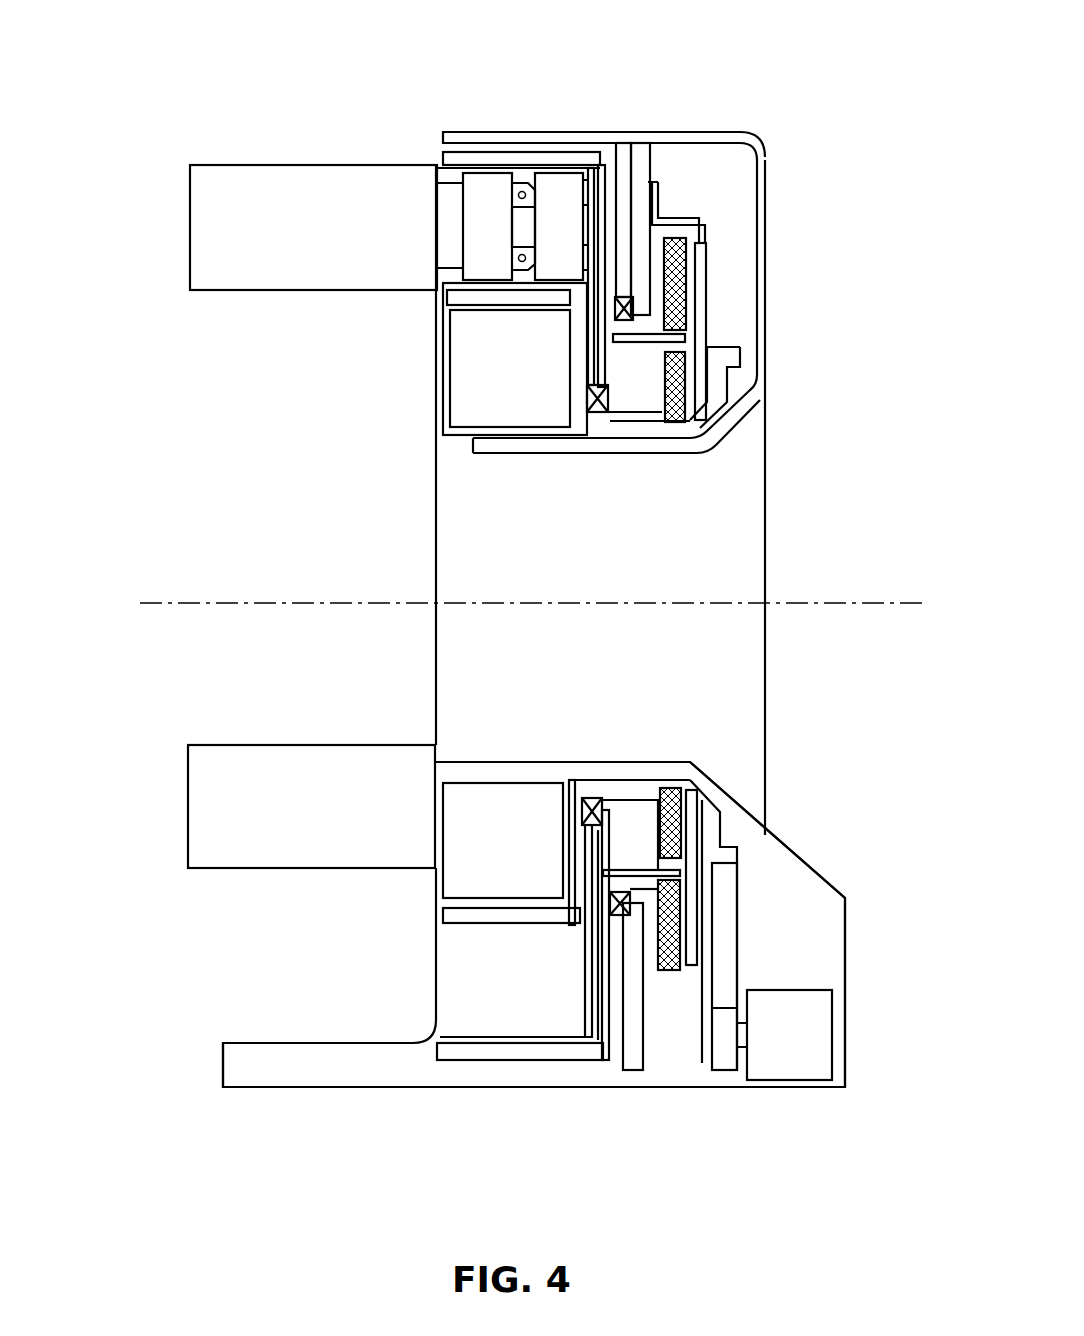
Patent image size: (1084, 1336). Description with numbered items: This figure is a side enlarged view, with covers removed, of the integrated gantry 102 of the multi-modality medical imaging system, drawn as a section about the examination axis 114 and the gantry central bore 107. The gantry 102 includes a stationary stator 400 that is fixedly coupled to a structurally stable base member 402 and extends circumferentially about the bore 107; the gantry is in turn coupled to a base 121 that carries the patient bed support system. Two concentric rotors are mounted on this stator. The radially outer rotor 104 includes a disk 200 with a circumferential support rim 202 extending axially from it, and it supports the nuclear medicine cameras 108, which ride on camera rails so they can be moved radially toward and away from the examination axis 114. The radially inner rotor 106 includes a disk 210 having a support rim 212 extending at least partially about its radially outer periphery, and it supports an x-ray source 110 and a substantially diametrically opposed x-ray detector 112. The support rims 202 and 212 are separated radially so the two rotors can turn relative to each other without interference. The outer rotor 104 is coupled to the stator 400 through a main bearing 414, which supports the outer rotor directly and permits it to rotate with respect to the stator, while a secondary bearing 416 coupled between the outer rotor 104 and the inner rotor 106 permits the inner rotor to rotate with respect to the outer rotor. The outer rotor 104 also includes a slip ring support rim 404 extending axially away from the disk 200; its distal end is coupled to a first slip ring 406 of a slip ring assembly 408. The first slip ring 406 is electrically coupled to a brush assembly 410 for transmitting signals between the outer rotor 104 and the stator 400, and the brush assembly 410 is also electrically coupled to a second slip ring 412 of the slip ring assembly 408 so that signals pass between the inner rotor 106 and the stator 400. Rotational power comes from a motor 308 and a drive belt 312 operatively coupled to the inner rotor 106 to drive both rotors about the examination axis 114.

The integrated gantry 102 is at (170, 40).
The radially outer rotor 104 is at (608, 160).
The radially inner rotor 106 is at (636, 424).
The gantry central bore 107 is at (542, 597).
The nuclear medicine camera 108 is at (345, 240).
The x-ray source 110 is at (542, 385).
The x-ray detector 112 is at (540, 858).
The examination axis 114 is at (862, 602).
The base 121 is at (342, 1082).
The disk 200 is at (602, 998).
The circumferential support rim 202 is at (506, 155).
The disk 210 is at (572, 910).
The support rim 212 is at (455, 295).
The motor 308 is at (822, 1054).
The drive belt 312 is at (724, 895).
The stationary stator 400 is at (642, 155).
The base member 402 is at (790, 1092).
The slip ring support rim 404 is at (626, 332).
The first slip ring 406 is at (668, 972).
The slip ring assembly 408 is at (722, 792).
The brush assembly 410 is at (714, 828).
The second slip ring 412 is at (674, 795).
The main bearing 414 is at (690, 318).
The secondary bearing 416 is at (600, 413).